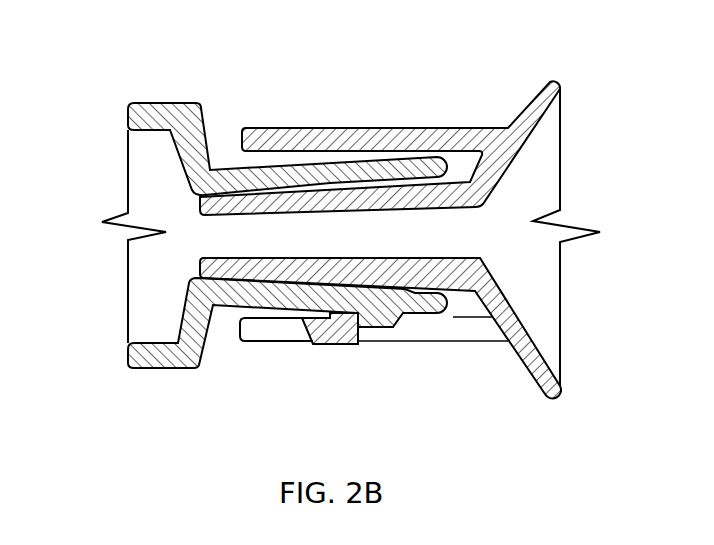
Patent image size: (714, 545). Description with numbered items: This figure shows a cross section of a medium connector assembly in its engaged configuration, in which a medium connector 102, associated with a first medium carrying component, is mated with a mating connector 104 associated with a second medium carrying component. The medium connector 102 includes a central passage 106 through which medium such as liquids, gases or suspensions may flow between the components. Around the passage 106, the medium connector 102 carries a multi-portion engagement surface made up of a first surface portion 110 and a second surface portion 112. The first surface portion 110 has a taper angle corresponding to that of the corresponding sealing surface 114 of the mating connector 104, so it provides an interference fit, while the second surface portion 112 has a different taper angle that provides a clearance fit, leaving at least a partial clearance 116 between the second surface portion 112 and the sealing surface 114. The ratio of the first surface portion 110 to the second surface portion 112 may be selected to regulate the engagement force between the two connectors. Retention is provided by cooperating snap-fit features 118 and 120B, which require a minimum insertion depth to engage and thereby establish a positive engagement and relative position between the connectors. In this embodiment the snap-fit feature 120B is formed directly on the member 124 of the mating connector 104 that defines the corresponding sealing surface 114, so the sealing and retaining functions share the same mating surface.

The medium connector 102 is at (551, 78).
The mating connector 104 is at (146, 103).
The passage 106 is at (440, 244).
The first surface portion 110 is at (270, 258).
The second surface portion 112 is at (453, 290).
The corresponding sealing surface 114 is at (200, 277).
The partial clearance 116 is at (451, 178).
The snap-fit feature 118 is at (315, 345).
The snap-fit feature 120B is at (385, 328).
The member 124 is at (331, 313).